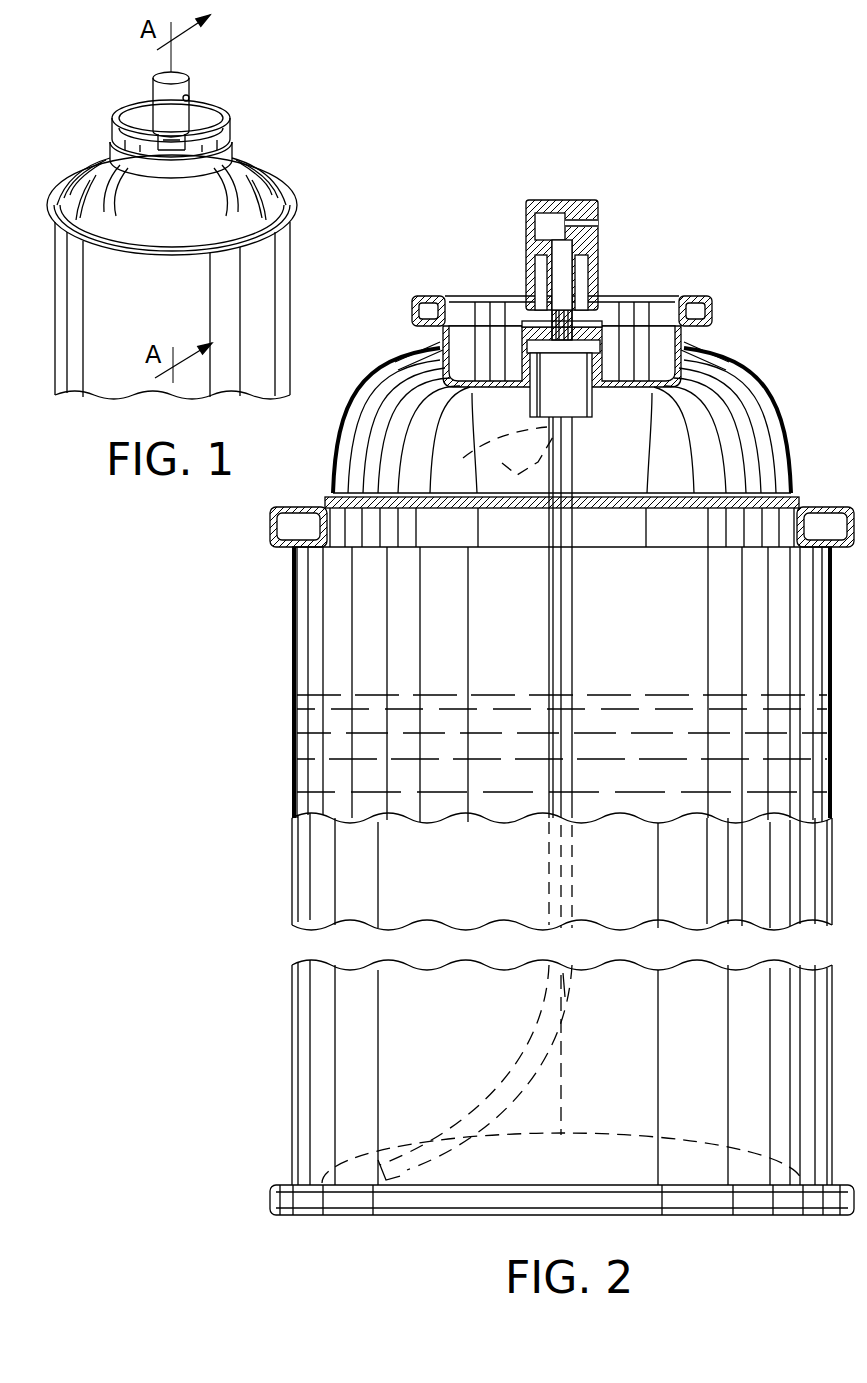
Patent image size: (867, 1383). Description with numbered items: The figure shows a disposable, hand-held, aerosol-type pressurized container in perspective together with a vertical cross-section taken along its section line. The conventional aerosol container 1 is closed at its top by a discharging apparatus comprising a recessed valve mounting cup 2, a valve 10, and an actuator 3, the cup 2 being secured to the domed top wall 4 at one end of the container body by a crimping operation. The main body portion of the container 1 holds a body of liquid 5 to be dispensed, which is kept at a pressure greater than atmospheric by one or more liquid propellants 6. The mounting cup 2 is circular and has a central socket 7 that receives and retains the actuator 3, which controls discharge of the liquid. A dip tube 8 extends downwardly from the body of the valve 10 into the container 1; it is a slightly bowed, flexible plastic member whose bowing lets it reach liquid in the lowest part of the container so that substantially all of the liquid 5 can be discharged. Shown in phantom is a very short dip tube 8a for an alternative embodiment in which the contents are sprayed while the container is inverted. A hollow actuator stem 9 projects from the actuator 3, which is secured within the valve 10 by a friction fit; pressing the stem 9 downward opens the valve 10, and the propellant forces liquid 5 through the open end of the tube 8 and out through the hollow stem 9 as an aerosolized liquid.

In FIG. 1, the aerosol container 1 is at (283, 258).
In FIG. 2, the valve mounting cup 2 is at (473, 372).
In FIG. 1, the valve mounting cup 2 is at (138, 142).
In FIG. 2, the actuator 3 is at (527, 222).
In FIG. 1, the actuator 3 is at (152, 90).
In FIG. 2, the domed top wall 4 is at (375, 380).
In FIG. 1, the domed top wall 4 is at (100, 177).
In FIG. 2, the liquid 5 is at (665, 792).
In FIG. 2, the liquid propellant 6 is at (656, 632).
In FIG. 2, the central socket 7 is at (547, 321).
In FIG. 2, the dip tube 8 is at (574, 880).
In FIG. 2, the short dip tube 8a is at (474, 462).
In FIG. 2, the actuator stem 9 is at (577, 318).
In FIG. 2, the valve 10 is at (537, 343).